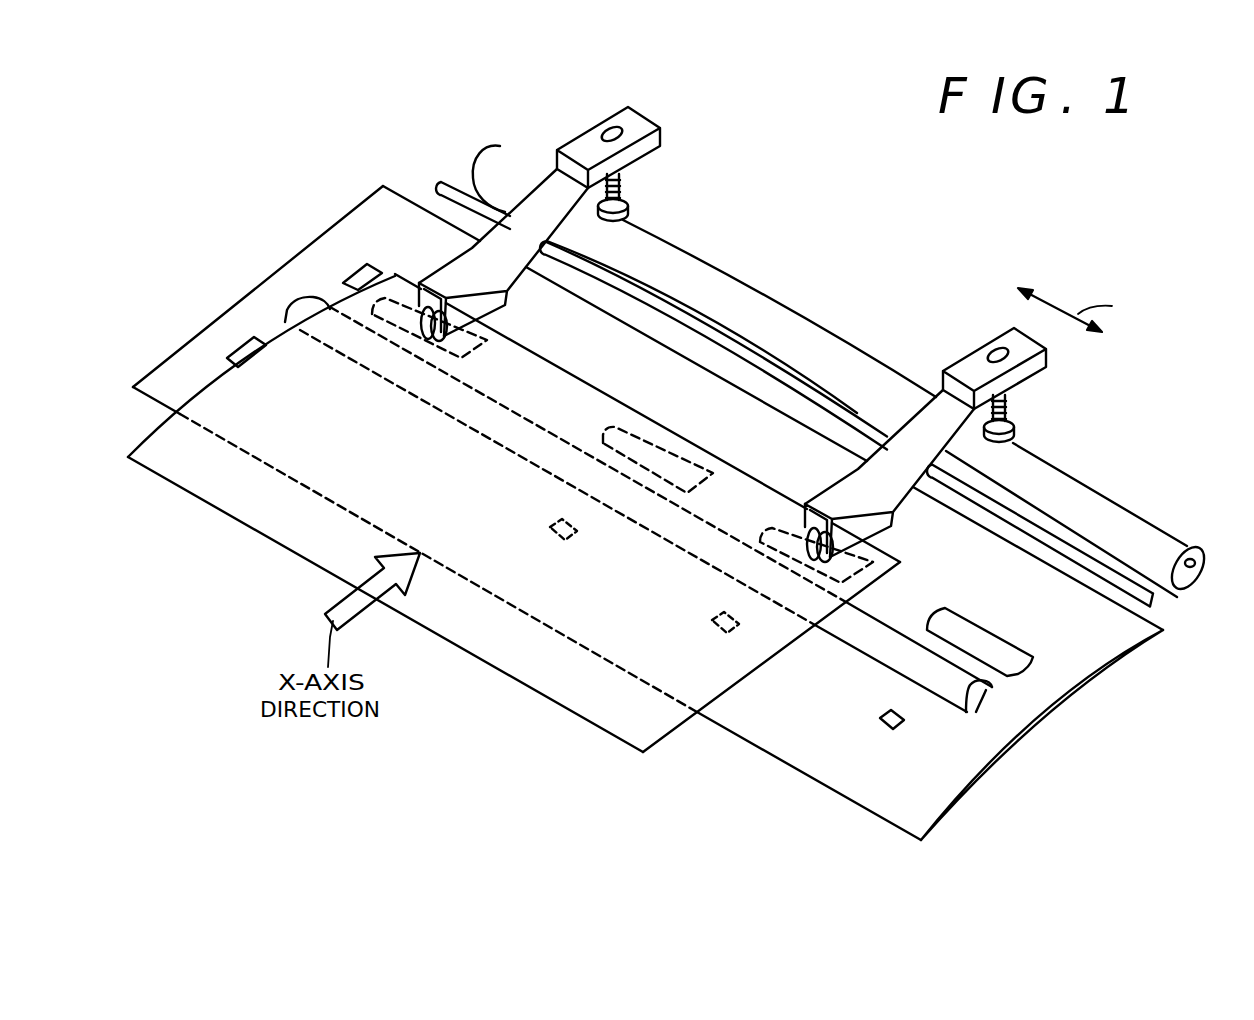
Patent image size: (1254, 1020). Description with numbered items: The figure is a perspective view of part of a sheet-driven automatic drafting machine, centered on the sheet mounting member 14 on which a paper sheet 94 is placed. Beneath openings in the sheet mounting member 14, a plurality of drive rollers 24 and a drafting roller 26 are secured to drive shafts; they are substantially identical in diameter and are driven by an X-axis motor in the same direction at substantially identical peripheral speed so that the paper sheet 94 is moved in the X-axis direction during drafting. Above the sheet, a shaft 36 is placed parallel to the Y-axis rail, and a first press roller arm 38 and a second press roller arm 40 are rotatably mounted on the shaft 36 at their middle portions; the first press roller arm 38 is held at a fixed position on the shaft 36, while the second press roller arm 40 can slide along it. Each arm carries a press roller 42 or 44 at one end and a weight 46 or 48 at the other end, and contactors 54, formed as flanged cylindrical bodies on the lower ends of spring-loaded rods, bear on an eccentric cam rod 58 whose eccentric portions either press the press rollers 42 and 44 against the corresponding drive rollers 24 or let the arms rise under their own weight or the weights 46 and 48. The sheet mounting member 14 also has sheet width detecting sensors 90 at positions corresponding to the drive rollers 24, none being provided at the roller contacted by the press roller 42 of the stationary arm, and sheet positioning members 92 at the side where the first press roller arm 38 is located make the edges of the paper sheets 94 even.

The sheet mounting member 14 is at (955, 745).
The drive rollers 24 is at (650, 443).
The drafting roller 26 is at (985, 690).
The shaft 36 is at (676, 324).
The first press roller arm 38 is at (471, 330).
The second press roller arm 40 is at (894, 561).
The press roller 42 is at (436, 334).
The press roller 44 is at (830, 555).
The weight 46 is at (640, 106).
The weight 48 is at (1035, 342).
The contactors 54 is at (487, 343).
The eccentric cam rod 58 is at (810, 328).
The sheet width detecting sensors 90 is at (548, 527).
The sheet restricting or positioning member 92 is at (362, 267).
The paper sheet 94 is at (240, 488).